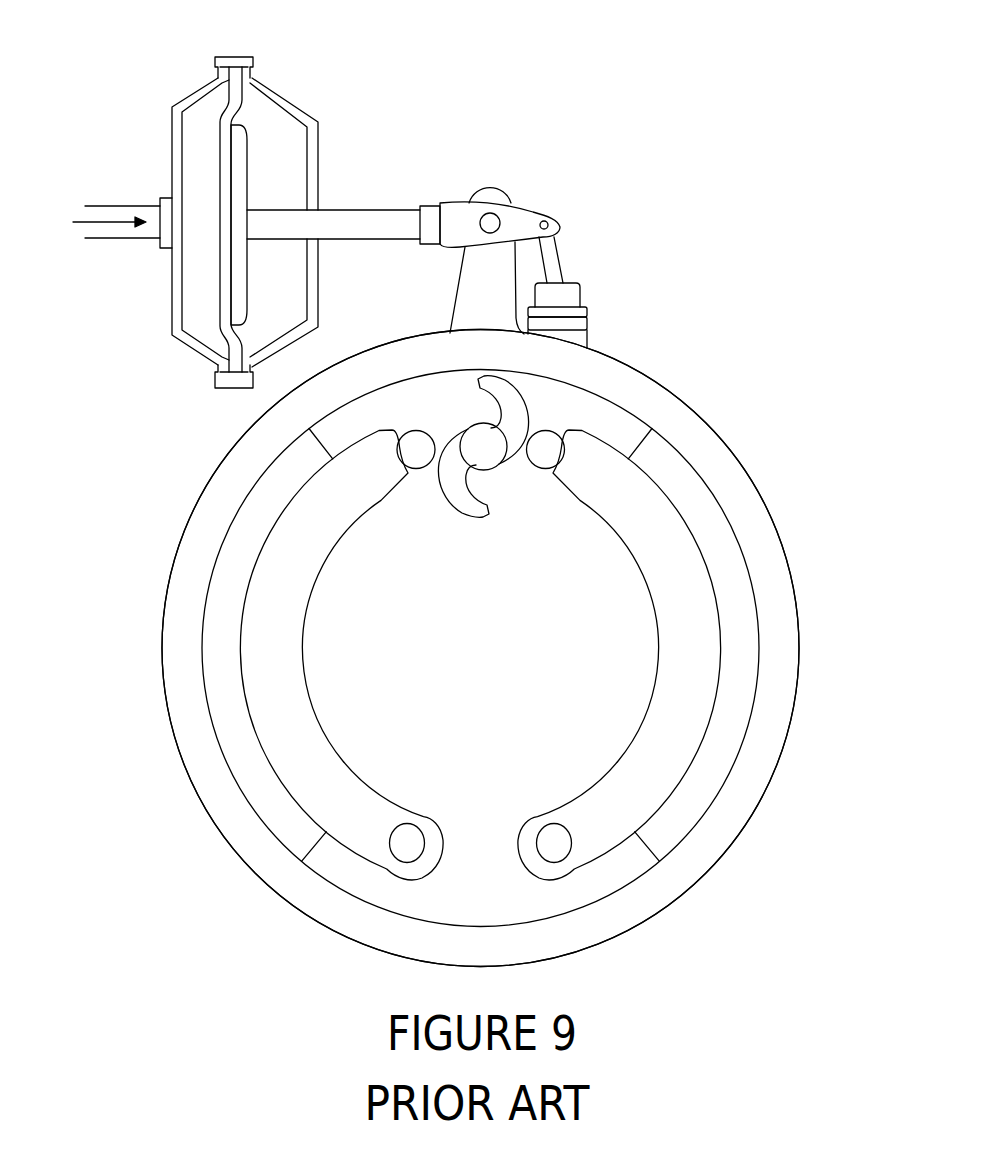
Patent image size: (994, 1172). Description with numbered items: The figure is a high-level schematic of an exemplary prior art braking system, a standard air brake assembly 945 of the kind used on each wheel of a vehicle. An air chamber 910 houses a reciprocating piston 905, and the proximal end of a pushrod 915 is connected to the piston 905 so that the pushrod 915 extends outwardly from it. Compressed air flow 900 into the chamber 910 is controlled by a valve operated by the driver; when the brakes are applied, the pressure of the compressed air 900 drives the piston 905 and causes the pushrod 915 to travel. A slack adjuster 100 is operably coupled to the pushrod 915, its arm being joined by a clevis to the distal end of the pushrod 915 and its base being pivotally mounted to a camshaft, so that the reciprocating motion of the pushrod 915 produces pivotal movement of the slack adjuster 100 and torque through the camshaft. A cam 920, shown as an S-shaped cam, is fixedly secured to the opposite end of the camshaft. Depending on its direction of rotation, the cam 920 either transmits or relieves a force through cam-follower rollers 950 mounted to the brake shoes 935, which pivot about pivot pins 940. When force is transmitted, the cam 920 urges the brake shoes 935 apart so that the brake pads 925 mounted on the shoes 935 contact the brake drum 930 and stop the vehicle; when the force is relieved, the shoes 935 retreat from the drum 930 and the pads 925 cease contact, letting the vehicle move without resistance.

The slack adjuster 100 is at (515, 200).
The compressed air flow 900 is at (101, 223).
The piston 905 is at (247, 183).
The air chamber 910 is at (290, 100).
The pushrod 915 is at (358, 212).
The cam 920 is at (527, 408).
The brake pads 925 is at (257, 522).
The brake drum 930 is at (790, 650).
The brake shoes 935 is at (293, 748).
The pivot pins 940 is at (408, 848).
The air brake assembly 945 is at (157, 607).
The cam-follower rollers 950 is at (546, 458).